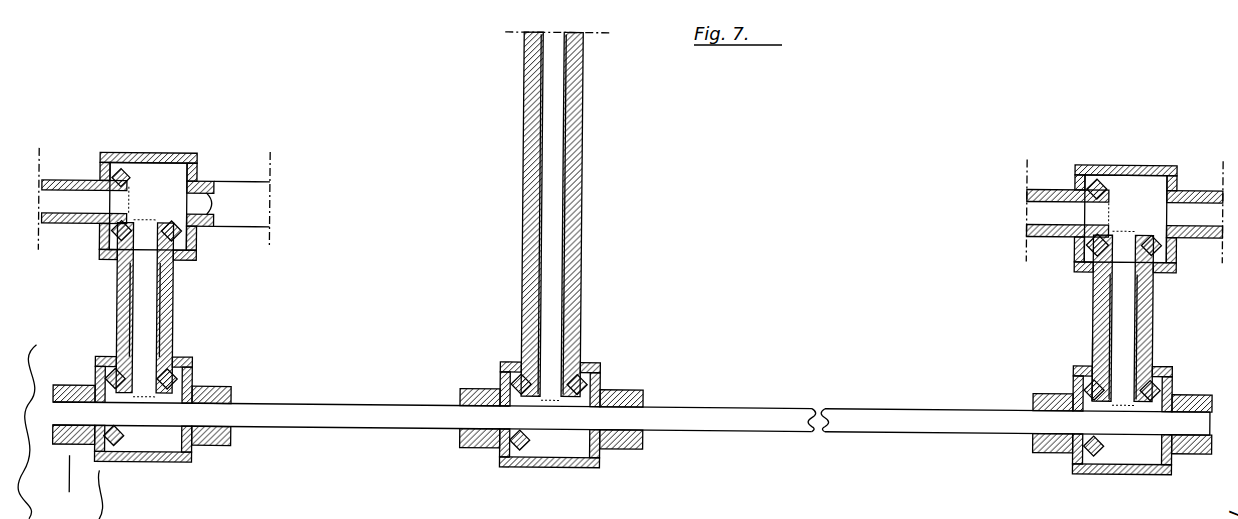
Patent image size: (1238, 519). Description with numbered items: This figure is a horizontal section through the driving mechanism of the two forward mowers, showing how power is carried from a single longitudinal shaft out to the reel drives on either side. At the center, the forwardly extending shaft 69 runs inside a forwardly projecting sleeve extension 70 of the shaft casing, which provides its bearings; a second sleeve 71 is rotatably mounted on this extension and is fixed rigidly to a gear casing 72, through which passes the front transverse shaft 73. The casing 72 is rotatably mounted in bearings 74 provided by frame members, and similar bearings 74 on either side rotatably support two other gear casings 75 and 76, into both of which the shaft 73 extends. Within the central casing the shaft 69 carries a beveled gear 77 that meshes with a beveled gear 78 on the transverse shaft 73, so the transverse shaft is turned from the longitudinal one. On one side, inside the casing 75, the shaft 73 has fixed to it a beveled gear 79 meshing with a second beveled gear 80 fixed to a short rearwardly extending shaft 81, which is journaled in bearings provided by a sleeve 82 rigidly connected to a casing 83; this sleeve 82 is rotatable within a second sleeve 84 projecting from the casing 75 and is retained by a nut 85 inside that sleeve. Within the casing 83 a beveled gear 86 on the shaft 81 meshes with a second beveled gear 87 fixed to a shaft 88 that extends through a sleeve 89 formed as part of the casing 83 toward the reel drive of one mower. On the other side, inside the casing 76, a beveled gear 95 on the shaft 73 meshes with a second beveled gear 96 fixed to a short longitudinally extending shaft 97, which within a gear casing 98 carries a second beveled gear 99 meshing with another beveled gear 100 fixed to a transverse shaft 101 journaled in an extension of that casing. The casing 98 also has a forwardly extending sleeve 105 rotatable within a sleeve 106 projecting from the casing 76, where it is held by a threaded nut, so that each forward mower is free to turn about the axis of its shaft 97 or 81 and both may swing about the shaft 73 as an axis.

The forwardly extending shaft 69 is at (557, 147).
The sleeve extension 70 is at (545, 163).
The second sleeve 71 is at (579, 210).
The gear casing 72 is at (577, 465).
The front transverse shaft 73 is at (757, 402).
The bearings 74 is at (215, 445).
The gear casing 75 is at (145, 462).
The gear casing 76 is at (1138, 466).
The beveled gear 77 is at (568, 400).
The beveled gear 78 is at (520, 464).
The beveled gear 79 is at (124, 437).
The second beveled gear 80 is at (164, 395).
The short rearwardly extending shaft 81 is at (150, 303).
The sleeve 82 is at (163, 337).
The casing 83 is at (148, 206).
The second sleeve 84 is at (118, 303).
The nut 85 is at (176, 372).
The beveled gear 86 is at (172, 224).
The second beveled gear 87 is at (127, 152).
The shaft 88 is at (58, 180).
The sleeve 89 is at (58, 223).
The beveled gear 95 is at (1090, 465).
The second beveled gear 96 is at (1158, 388).
The short longitudinally extending shaft 97 is at (1125, 306).
The gear casing 98 is at (1156, 150).
The second beveled gear 99 is at (1148, 224).
The beveled gear 100 is at (1093, 172).
The transverse shaft 101 is at (1030, 205).
The forwardly extending sleeve 105 is at (1092, 278).
The sleeve 106 is at (1092, 333).